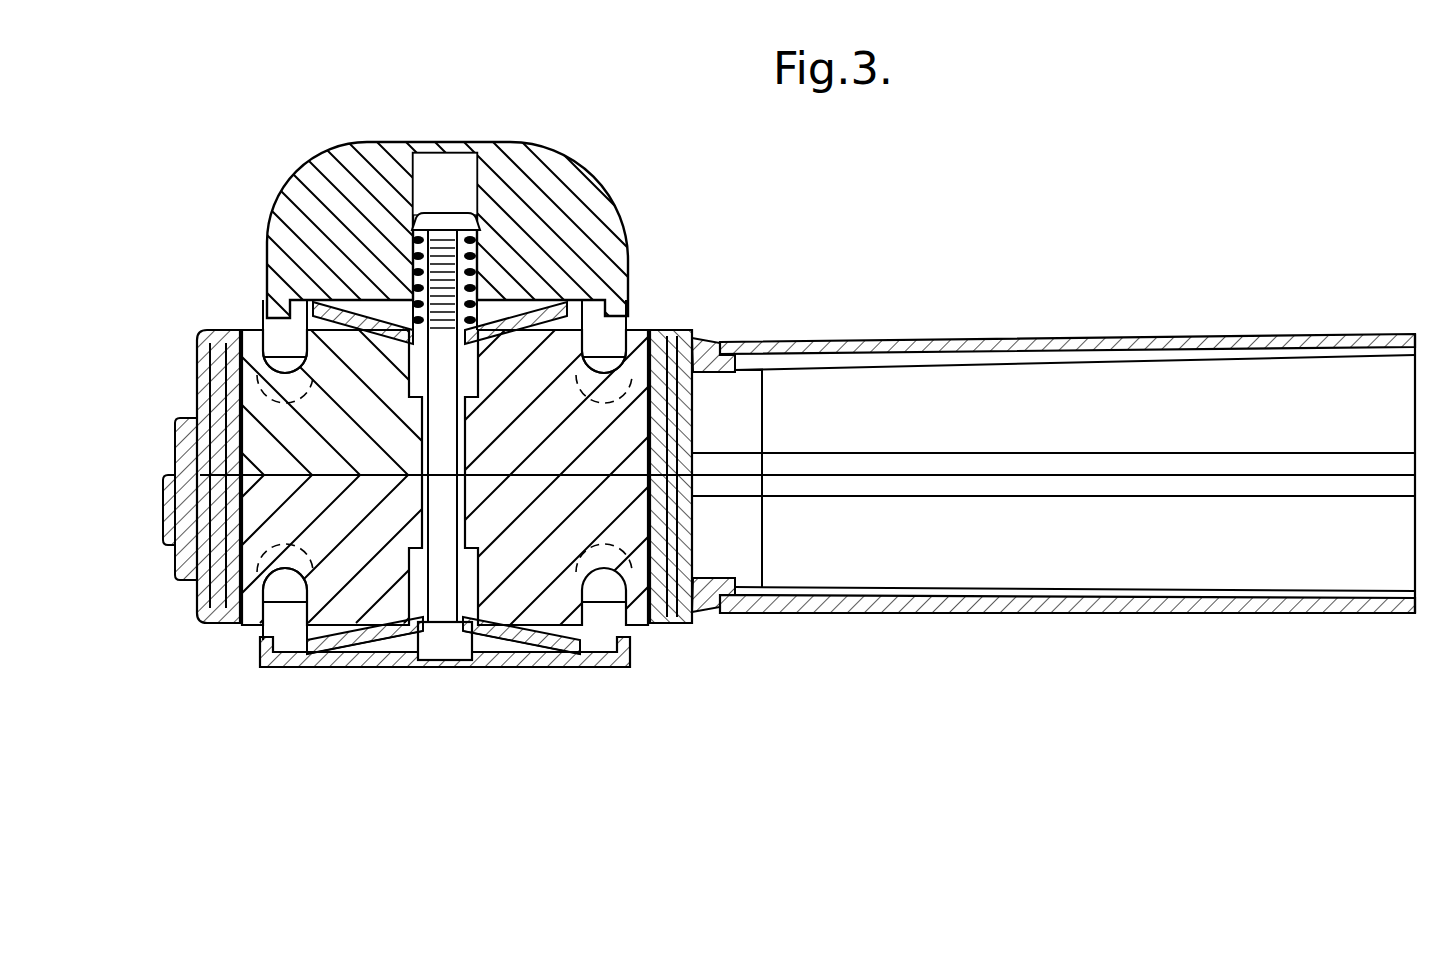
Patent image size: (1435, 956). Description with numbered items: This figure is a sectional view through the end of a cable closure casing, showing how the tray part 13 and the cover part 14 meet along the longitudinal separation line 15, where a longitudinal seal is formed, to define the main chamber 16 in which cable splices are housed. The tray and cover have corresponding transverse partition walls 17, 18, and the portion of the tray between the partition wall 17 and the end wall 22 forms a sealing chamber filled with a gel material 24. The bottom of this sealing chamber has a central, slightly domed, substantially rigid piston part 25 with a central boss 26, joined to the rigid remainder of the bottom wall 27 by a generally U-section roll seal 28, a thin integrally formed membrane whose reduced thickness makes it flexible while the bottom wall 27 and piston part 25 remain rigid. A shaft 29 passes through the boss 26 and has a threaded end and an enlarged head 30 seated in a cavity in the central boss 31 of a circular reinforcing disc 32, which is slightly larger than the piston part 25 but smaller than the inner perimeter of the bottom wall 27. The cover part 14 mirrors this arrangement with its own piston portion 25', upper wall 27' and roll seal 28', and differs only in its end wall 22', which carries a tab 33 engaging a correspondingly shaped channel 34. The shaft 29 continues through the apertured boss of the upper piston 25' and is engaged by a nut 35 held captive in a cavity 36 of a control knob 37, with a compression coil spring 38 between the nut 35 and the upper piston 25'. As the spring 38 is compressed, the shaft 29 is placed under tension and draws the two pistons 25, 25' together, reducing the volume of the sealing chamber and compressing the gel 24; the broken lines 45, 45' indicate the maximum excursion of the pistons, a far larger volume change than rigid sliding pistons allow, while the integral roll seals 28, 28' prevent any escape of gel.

The tray part 13 is at (1140, 614).
The cover part 14 is at (1078, 334).
The longitudinal separation line 15 is at (1080, 478).
The main chamber 16 is at (1005, 613).
The transverse partition wall 17 is at (698, 520).
The transverse partition wall 18 is at (700, 428).
The end wall 22 is at (178, 501).
The end wall 22' is at (227, 328).
The gel material 24 is at (358, 640).
The piston part 25 is at (530, 669).
The piston portion 25' is at (311, 283).
The central boss 26 is at (480, 392).
The bottom wall 27 is at (687, 633).
The upper wall 27' is at (388, 299).
The roll seal 28 is at (239, 630).
The roll seal 28' is at (643, 322).
The shaft 29 is at (388, 622).
The enlarged head 30 is at (440, 660).
The central boss 31 is at (505, 640).
The reinforcing disc 32 is at (270, 670).
The tab 33 is at (178, 462).
The channel 34 is at (170, 545).
The nut 35 is at (486, 230).
The cavity 36 is at (462, 170).
The control knob 37 is at (410, 150).
The compression coil spring 38 is at (410, 328).
The broken line 45 is at (438, 550).
The broken line 45' is at (437, 402).